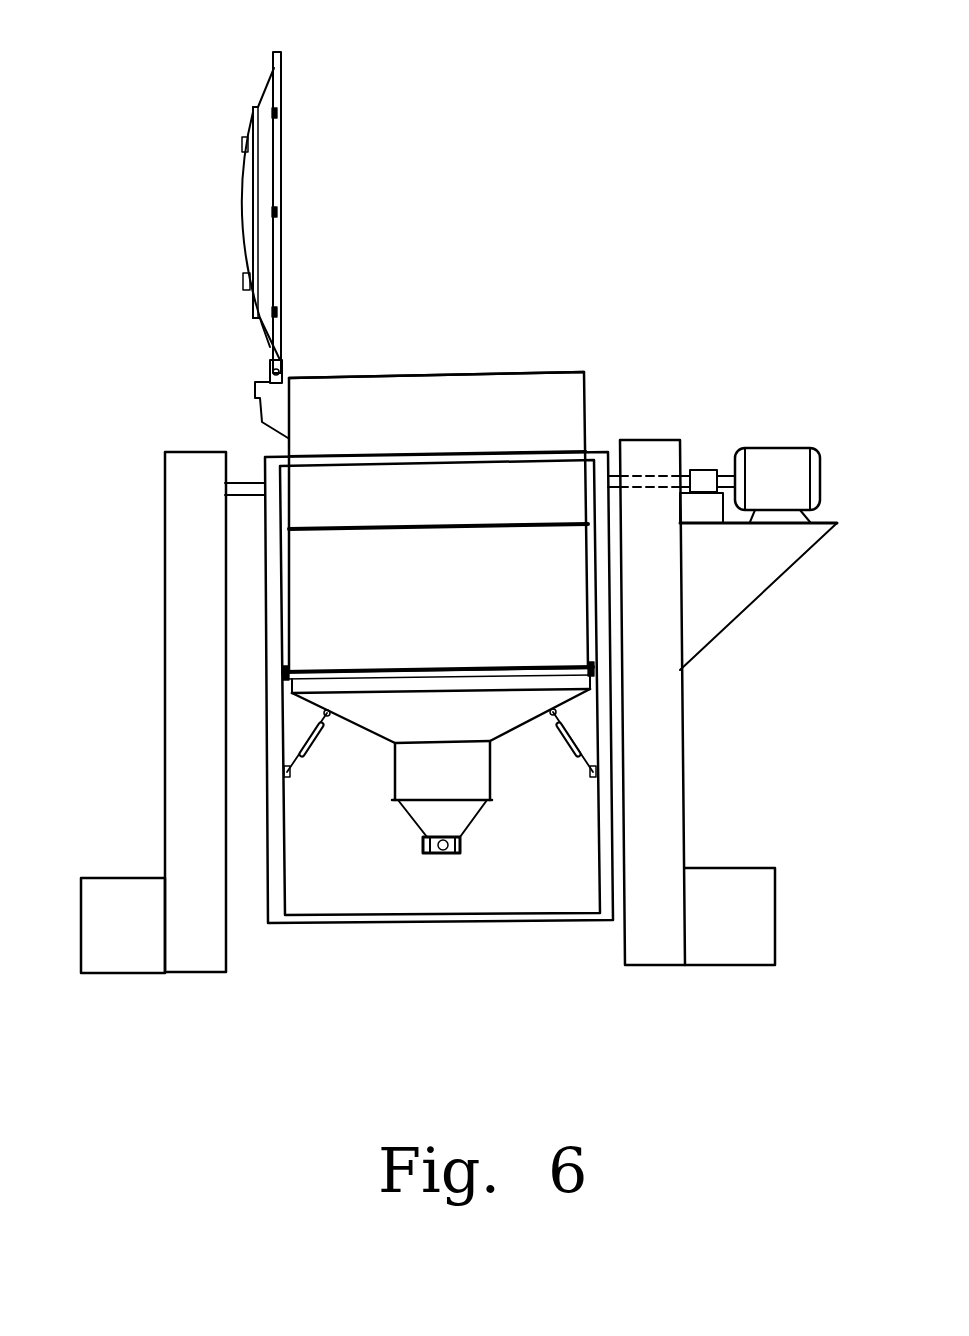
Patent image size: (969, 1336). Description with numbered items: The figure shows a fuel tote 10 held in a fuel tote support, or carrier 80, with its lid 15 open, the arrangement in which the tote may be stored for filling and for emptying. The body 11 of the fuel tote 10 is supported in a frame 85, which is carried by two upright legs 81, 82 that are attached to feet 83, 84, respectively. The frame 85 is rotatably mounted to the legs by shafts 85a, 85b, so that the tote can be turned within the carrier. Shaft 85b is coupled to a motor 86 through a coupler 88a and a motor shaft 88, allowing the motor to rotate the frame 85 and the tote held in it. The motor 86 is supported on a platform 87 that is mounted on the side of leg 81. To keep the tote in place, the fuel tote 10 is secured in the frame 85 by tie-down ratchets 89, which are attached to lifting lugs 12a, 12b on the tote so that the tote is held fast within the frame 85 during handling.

The fuel tote 10 is at (438, 372).
The body 11 is at (513, 373).
The lifting lug 12a is at (327, 713).
The lifting lug 12b is at (550, 712).
The lid 15 is at (243, 245).
The carrier 80 is at (835, 744).
The leg 81 is at (688, 805).
The leg 82 is at (165, 700).
The foot 83 is at (777, 932).
The foot 84 is at (109, 878).
The frame 85 is at (593, 452).
The shaft 85a is at (229, 403).
The shaft 85b is at (613, 476).
The motor 86 is at (818, 450).
The platform 87 is at (767, 595).
The motor shaft 88 is at (728, 476).
The coupler 88a is at (708, 470).
The tie-down ratchet 89 is at (308, 753).